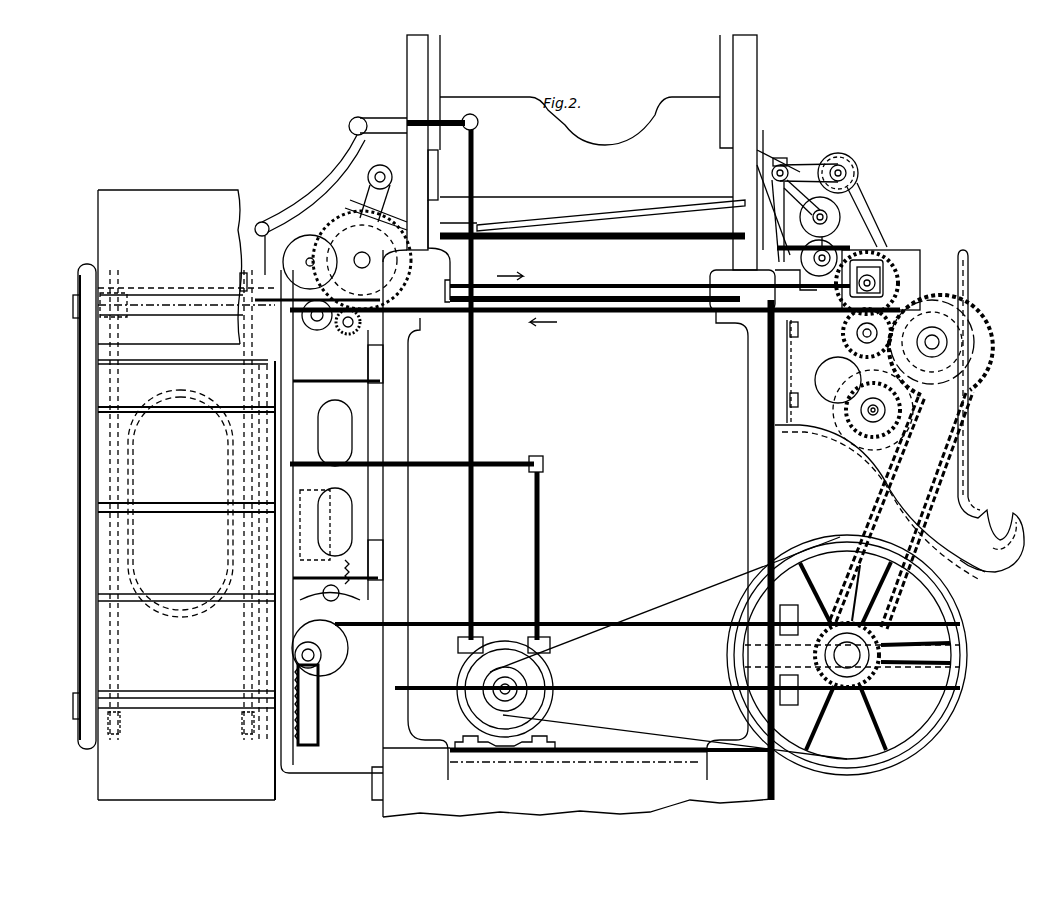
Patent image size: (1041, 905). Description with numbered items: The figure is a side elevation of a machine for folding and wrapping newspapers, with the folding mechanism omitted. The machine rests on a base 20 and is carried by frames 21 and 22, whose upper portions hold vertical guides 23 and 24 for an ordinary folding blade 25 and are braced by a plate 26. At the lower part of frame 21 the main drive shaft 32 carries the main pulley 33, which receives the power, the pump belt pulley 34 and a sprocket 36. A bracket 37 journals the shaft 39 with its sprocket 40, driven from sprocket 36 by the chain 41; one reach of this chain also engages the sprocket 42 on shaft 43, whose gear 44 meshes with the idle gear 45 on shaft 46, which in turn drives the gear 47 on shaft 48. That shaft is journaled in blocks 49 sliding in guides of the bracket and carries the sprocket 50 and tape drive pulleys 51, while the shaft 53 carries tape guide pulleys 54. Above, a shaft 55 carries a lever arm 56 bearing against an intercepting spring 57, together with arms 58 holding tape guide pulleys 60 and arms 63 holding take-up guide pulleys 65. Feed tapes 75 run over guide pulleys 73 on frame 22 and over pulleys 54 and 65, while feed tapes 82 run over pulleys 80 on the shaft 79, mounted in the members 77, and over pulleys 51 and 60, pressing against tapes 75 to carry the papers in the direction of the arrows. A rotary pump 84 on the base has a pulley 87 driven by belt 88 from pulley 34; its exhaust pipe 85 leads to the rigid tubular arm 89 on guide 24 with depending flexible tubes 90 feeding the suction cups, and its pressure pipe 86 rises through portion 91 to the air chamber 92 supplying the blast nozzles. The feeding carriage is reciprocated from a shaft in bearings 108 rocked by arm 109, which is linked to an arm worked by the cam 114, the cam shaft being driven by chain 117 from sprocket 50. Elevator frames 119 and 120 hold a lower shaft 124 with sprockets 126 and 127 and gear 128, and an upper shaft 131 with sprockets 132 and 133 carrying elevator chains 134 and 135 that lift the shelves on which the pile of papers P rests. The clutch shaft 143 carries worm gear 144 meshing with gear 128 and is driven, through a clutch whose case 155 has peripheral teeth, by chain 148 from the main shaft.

The base 20 is at (572, 782).
The frame 21 is at (768, 488).
The frame 22 is at (410, 605).
The vertical guide 23 is at (760, 66).
The vertical guide 24 is at (440, 55).
The folding blade 25 is at (644, 128).
The plate 26 is at (620, 295).
The main drive shaft 32 is at (847, 655).
The main pulley 33 is at (955, 710).
The pump belt pulley 34 is at (858, 757).
The sprocket 36 is at (884, 638).
The bracket 37 is at (968, 480).
The shaft 39 is at (940, 350).
The sprocket 40 is at (980, 325).
The chain 41 is at (898, 605).
The sprocket 42 is at (850, 425).
The shaft 43 is at (870, 413).
The gear 44 is at (852, 452).
The idle gear 45 is at (857, 348).
The shaft 46 is at (857, 331).
The gear 47 is at (884, 255).
The shaft 48 is at (875, 280).
The block 49 is at (880, 275).
The sprocket 50 is at (817, 293).
The tape drive pulley 51 is at (876, 284).
The shaft 53 is at (814, 257).
The tape guide pulley 54 is at (805, 266).
The shaft 55 is at (786, 166).
The lever arm 56 is at (775, 225).
The intercepting spring 57 is at (758, 222).
The arm 58 is at (810, 163).
The tape guide pulley 60 is at (860, 168).
The arm 63 is at (835, 213).
The take up guide pulley 65 is at (843, 220).
The guide pulley 73 is at (310, 262).
The feed tape 75 is at (648, 210).
The frame member 77 is at (356, 514).
The shaft 79 is at (338, 322).
The pulley 80 is at (320, 330).
The feed tape 82 is at (542, 285).
The rotary pump 84 is at (553, 668).
The exhaust pipe 85 is at (476, 402).
The pressure pipe 86 is at (455, 470).
The pulley 87 is at (527, 695).
The belt 88 is at (694, 600).
The rigid tubular arm 89 is at (384, 116).
The flexible tube 90 is at (356, 184).
The upwardly extending portion 91 is at (305, 396).
The air chamber 92 is at (267, 340).
The bearing 108 is at (398, 165).
The arm 109 is at (362, 190).
The cam 114 is at (444, 299).
The chain 117 is at (676, 322).
The elevator frame 119 is at (78, 558).
The elevator frame 120 is at (279, 735).
The lower shaft 124 is at (72, 706).
The sprocket 126 is at (240, 730).
The sprocket 127 is at (122, 732).
The gear 128 is at (308, 745).
The upper shaft 131 is at (72, 306).
The sprocket 132 is at (240, 243).
The sprocket 133 is at (118, 280).
The sprocket chain 134 is at (238, 505).
The sprocket chain 135 is at (118, 382).
The clutch shaft 143 is at (312, 660).
The worm gear 144 is at (322, 648).
The chain 148 is at (588, 624).
The clutch case 155 is at (360, 612).
The paper P is at (182, 296).